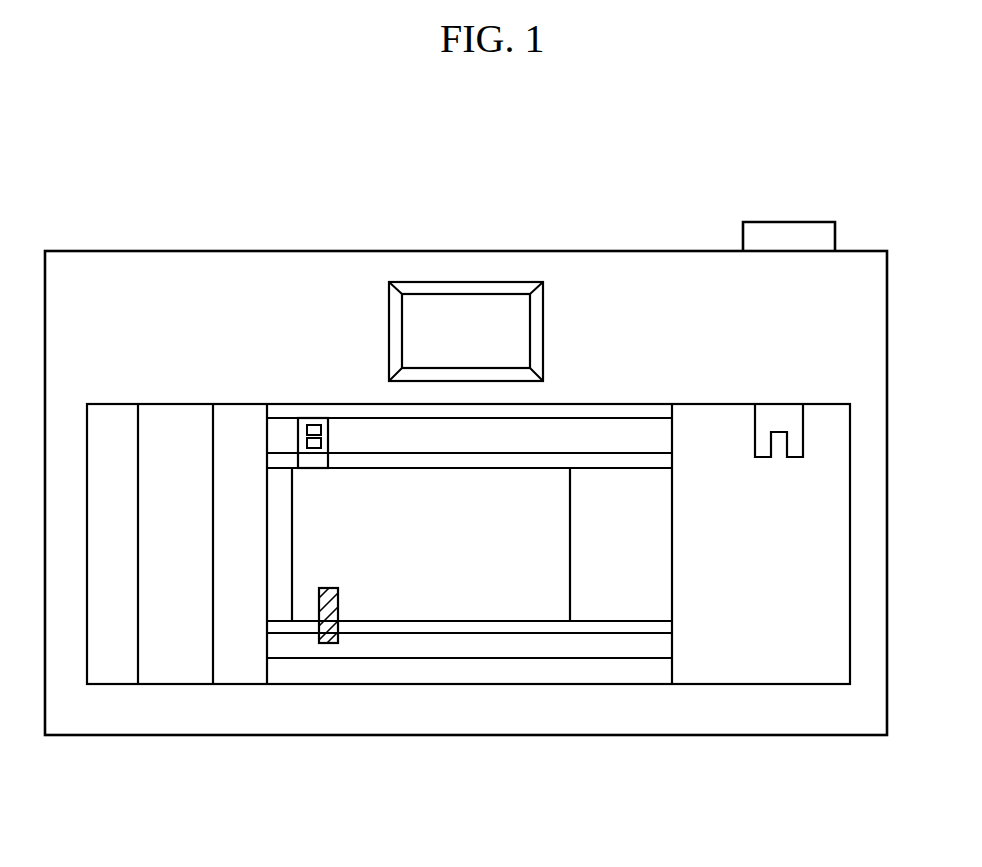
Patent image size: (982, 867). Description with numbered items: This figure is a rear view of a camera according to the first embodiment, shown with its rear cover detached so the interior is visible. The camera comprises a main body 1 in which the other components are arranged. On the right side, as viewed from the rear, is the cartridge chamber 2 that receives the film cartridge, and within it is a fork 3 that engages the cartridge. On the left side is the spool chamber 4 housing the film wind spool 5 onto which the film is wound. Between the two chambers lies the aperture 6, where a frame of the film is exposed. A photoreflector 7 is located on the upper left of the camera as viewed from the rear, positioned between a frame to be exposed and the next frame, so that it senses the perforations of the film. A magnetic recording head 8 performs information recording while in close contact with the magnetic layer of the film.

The main body 1 is at (597, 268).
The cartridge chamber 2 is at (777, 667).
The fork 3 is at (781, 418).
The spool chamber 4 is at (110, 670).
The film wind spool 5 is at (185, 670).
The aperture 6 is at (475, 603).
The photoreflector 7 is at (329, 403).
The magnetic recording head 8 is at (325, 645).